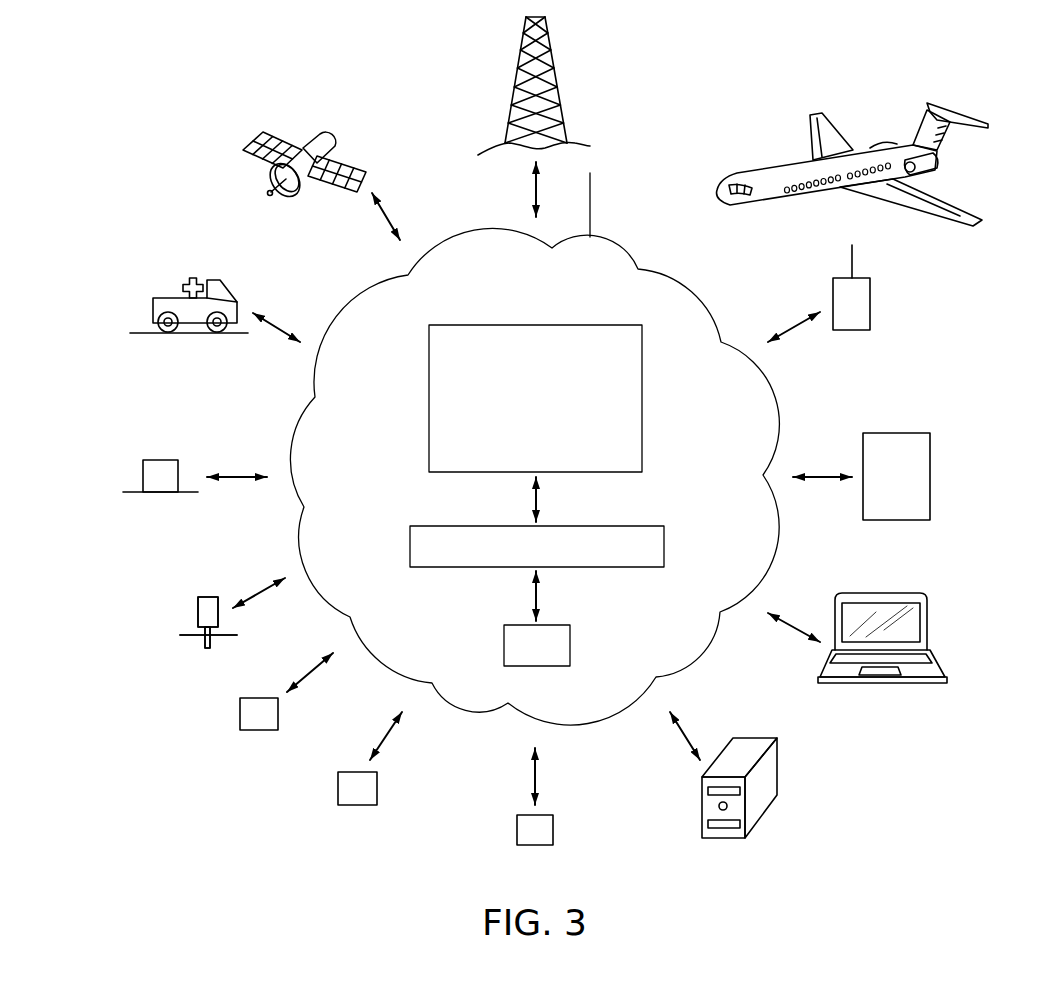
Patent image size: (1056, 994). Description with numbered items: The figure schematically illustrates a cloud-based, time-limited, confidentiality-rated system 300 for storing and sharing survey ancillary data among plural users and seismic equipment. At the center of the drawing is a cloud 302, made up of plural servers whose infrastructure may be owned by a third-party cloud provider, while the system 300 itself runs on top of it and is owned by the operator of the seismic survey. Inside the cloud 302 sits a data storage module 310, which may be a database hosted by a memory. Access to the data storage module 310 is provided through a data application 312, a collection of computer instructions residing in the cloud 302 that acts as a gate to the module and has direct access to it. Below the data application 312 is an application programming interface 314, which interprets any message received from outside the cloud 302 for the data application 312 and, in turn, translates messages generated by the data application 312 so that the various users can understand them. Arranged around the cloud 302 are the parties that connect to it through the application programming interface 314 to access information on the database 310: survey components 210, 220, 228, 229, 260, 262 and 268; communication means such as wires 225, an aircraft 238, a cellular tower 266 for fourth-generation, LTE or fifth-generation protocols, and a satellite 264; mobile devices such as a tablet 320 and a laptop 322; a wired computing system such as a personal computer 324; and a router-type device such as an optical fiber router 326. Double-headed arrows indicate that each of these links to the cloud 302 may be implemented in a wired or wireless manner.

The seismic survey component 210 is at (172, 292).
The seismic survey component 220 is at (160, 458).
The wires 225 is at (590, 205).
The seismic survey component 228 is at (240, 712).
The seismic survey component 229 is at (338, 787).
The aircraft 238 is at (855, 140).
The seismic survey component 260 is at (208, 622).
The seismic survey component 268 is at (208, 622).
The seismic survey component 262 is at (870, 305).
The satellite 264 is at (302, 134).
The cellular tower 266 is at (556, 42).
The system 300 is at (422, 410).
The cloud 302 is at (449, 655).
The data storage module 310 is at (536, 323).
The data application 312 is at (664, 545).
The application programming interface 314 is at (570, 645).
The tablet 320 is at (930, 475).
The laptop 322 is at (927, 627).
The personal computer 324 is at (763, 787).
The optical fiber router 326 is at (553, 830).